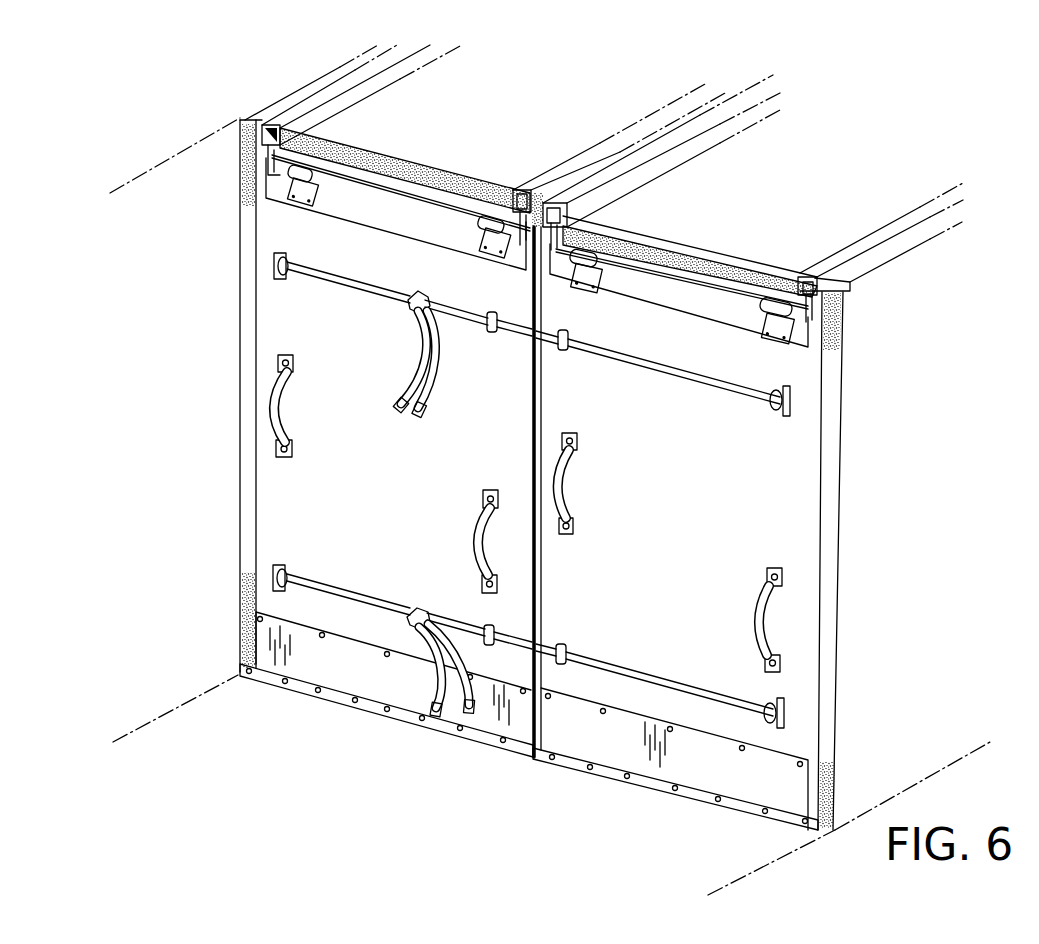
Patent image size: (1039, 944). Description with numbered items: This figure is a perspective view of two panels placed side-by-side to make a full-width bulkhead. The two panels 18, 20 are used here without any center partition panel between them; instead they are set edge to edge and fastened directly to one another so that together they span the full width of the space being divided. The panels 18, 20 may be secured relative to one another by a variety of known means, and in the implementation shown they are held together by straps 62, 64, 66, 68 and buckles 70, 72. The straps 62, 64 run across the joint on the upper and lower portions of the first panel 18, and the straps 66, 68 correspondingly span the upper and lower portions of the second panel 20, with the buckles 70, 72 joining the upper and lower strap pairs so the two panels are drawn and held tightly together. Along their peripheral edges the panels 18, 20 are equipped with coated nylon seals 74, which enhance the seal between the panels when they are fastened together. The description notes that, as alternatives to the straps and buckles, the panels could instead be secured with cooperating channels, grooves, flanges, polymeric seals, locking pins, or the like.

The panel 18 is at (370, 441).
The panel 20 is at (709, 519).
The strap 62 is at (326, 278).
The strap 64 is at (338, 594).
The strap 66 is at (647, 376).
The strap 68 is at (648, 672).
The buckle 70 is at (418, 296).
The buckle 72 is at (416, 610).
The coated nylon seal 74 is at (244, 296).